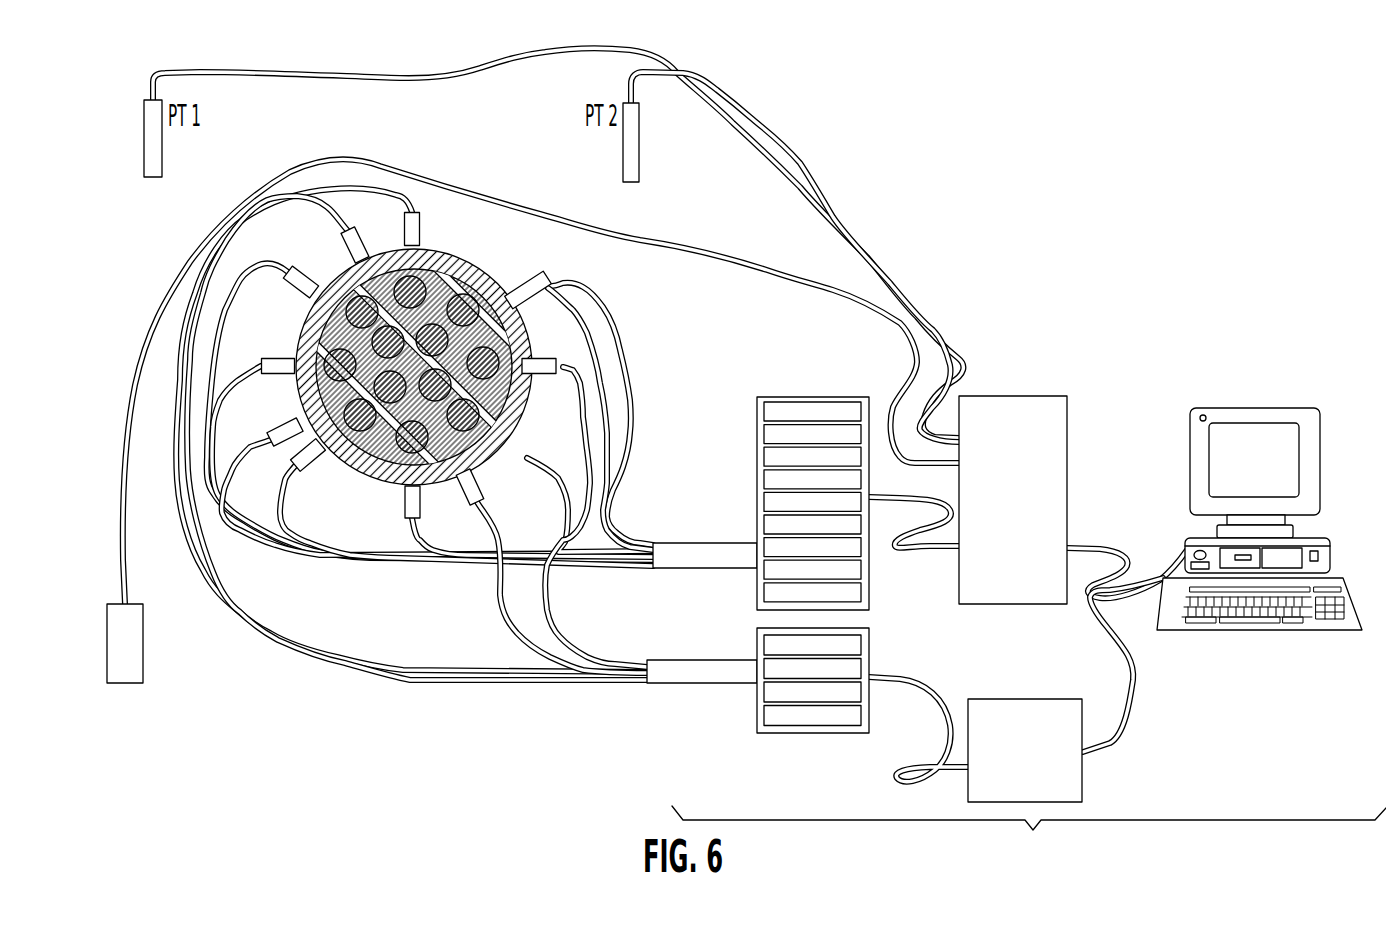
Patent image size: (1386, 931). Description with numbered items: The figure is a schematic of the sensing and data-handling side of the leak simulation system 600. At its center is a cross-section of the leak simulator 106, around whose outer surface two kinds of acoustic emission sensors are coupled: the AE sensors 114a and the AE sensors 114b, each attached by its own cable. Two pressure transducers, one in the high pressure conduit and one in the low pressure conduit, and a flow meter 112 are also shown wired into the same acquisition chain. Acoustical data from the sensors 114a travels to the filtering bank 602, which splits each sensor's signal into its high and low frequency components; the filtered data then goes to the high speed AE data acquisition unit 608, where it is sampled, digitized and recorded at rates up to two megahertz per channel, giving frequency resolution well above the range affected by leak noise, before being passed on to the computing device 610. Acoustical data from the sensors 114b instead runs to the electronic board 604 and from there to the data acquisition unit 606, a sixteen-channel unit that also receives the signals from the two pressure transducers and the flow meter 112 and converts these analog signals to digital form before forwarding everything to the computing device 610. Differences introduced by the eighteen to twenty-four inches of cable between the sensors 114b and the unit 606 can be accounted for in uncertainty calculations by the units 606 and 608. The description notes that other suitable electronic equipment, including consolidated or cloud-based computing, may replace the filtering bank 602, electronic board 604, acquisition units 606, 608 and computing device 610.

The leak simulator 106 is at (470, 265).
The flow meter 112 is at (133, 683).
The AE sensors 114a is at (350, 246).
The AE sensors 114b is at (422, 230).
The leak simulation system 600 is at (1029, 835).
The filtering bank 602 is at (757, 722).
The electronic board 604 is at (757, 470).
The data acquisition unit 606 is at (1010, 396).
The high speed AE data acquisition unit 608 is at (1082, 800).
The computing device 610 is at (1230, 408).